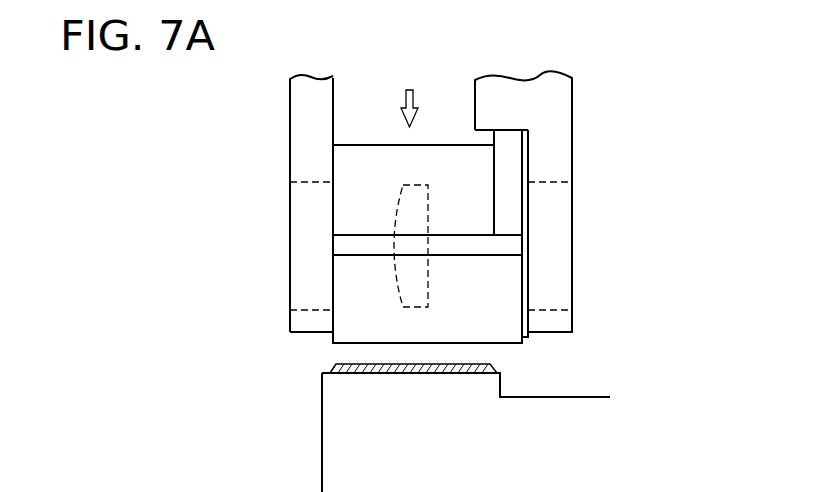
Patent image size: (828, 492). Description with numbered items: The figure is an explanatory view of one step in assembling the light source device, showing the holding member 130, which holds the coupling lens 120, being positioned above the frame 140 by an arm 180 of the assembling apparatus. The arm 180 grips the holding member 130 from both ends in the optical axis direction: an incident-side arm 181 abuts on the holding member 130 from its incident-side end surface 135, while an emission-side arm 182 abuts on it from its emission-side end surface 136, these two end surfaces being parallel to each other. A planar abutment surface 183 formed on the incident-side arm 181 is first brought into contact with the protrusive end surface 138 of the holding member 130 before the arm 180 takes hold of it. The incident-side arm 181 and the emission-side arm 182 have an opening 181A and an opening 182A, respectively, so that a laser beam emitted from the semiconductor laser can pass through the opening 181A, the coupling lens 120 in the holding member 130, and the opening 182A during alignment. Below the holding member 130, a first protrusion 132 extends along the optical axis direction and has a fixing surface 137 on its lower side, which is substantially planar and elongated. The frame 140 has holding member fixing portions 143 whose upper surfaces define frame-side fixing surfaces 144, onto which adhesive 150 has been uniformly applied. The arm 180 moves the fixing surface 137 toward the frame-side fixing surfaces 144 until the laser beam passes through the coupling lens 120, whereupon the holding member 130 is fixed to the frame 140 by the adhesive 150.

The arm 180 is at (472, 48).
The incident-side arm 181 is at (517, 85).
The emission-side arm 182 is at (325, 98).
The opening 181A is at (552, 308).
The opening 182A is at (310, 307).
The holding member 130 is at (385, 145).
The coupling lens 120 is at (424, 185).
The first protrusion 132 is at (516, 247).
The incident-side end surface 135 is at (530, 170).
The emission-side end surface 136 is at (333, 163).
The fixing surface 137 is at (477, 255).
The protrusive end surface 138 is at (505, 128).
The abutment surface 183 is at (513, 132).
The frame 140 is at (472, 455).
The holding member fixing portion 143 is at (322, 390).
The frame-side fixing surface 144 is at (376, 362).
The adhesive 150 is at (487, 362).